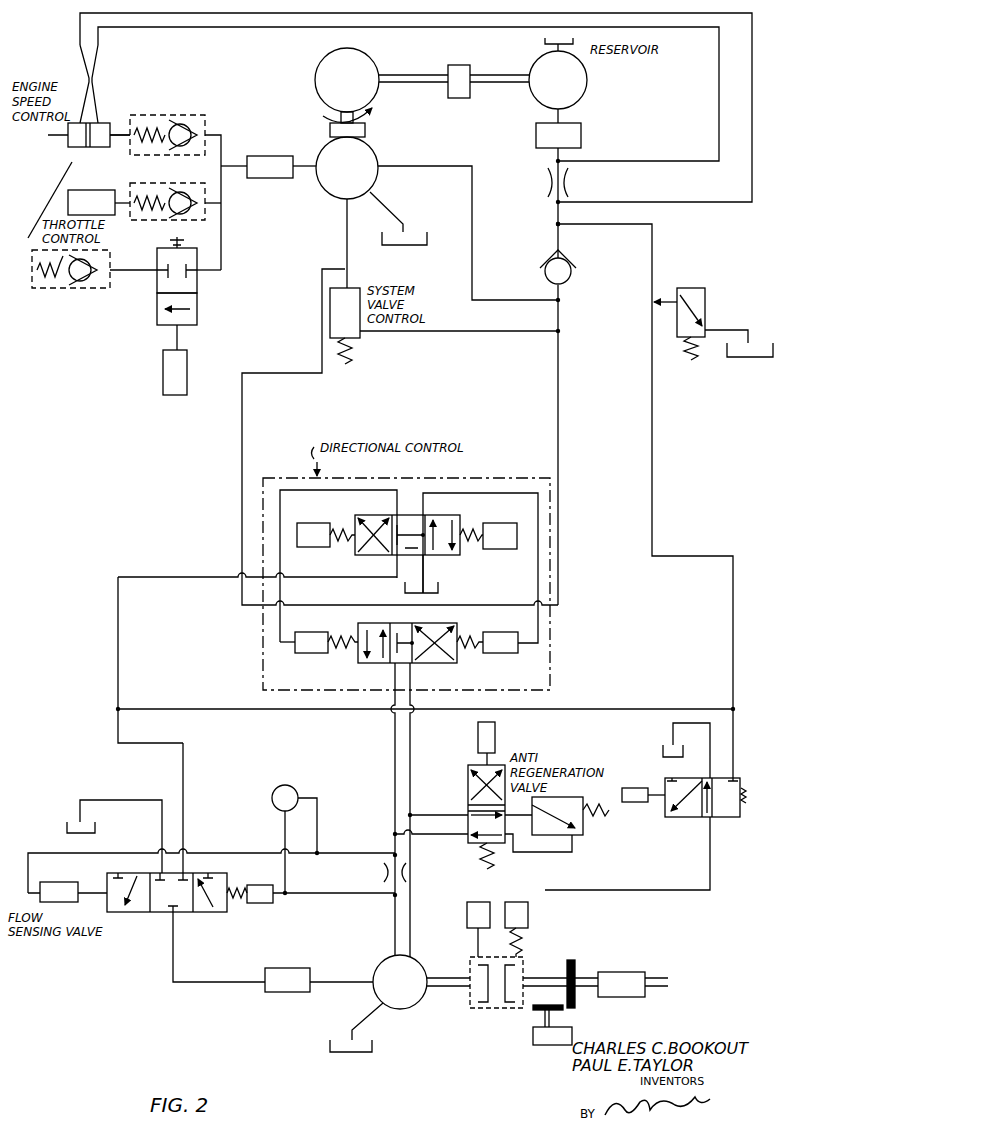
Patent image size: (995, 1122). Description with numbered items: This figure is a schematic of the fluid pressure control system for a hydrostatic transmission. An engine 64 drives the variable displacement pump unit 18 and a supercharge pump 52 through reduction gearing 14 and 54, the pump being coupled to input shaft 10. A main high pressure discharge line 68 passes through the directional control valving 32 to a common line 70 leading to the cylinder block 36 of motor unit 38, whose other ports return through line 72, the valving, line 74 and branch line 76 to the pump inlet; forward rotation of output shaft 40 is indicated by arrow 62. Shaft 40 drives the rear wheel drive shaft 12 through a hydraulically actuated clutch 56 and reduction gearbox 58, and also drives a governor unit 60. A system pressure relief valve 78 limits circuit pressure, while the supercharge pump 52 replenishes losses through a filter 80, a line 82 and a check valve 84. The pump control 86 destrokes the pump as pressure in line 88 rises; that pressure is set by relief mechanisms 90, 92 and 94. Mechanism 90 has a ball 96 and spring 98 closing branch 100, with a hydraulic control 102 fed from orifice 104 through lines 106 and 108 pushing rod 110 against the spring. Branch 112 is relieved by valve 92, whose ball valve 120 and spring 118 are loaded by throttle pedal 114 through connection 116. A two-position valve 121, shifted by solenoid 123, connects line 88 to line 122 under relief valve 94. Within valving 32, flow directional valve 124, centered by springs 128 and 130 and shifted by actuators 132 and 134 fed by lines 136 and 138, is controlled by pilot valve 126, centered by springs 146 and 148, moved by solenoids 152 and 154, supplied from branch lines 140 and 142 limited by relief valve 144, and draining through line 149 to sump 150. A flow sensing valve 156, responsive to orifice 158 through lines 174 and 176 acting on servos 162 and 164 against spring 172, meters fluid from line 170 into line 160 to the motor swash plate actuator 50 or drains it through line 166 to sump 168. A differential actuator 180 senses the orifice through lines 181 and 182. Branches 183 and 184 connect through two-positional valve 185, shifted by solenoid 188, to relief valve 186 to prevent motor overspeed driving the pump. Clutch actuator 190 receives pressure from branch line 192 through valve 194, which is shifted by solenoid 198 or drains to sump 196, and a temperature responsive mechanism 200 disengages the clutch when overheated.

The input shaft 10 is at (340, 118).
The power output shaft 12 is at (648, 963).
The reduction gearing 14 is at (370, 128).
The hydraulic pump 18 is at (318, 182).
The directional control valving 32 is at (550, 593).
The cylinder block 36 is at (386, 959).
The motor unit 38 is at (424, 962).
The output shaft 40 is at (446, 968).
The piston actuator 50 is at (277, 967).
The supercharge pump 52 is at (548, 66).
The reduction gearing 54 is at (462, 78).
The hydraulically actuated clutch 56 is at (545, 951).
The reduction gearbox 58 is at (603, 960).
The governor unit 60 is at (533, 1040).
The arrow 62 is at (405, 95).
The engine 64 is at (323, 63).
The main high pressure pump discharge line 68 is at (320, 285).
The common line 70 is at (392, 748).
The common low pressure return line 72 is at (410, 915).
The line 74 is at (564, 372).
The branch line 76 is at (454, 168).
The system pressure relief valve 78 is at (348, 288).
The filter 80 is at (582, 136).
The line 82 is at (555, 212).
The non-return check valve 84 is at (576, 276).
The pump control 86 is at (282, 160).
The line 88 is at (247, 182).
The relief valve mechanism 90 is at (179, 125).
The pressure relief valve 92 is at (174, 205).
The pressure relief valve 94 is at (80, 297).
The ball 96 is at (179, 114).
The spring 98 is at (143, 114).
The branch 100 is at (222, 142).
The hydraulic control 102 is at (68, 135).
The orifice 104 is at (541, 184).
The line 106 is at (643, 167).
The line 108 is at (602, 205).
The actuating rod 110 is at (119, 142).
The parallel branch 112 is at (208, 189).
The throttle pedal 114 is at (50, 184).
The mechanical connection 116 is at (95, 190).
The spring 118 is at (164, 220).
The ball valve 120 is at (177, 224).
The two-position flow-through valve 121 is at (197, 298).
The line 122 is at (128, 272).
The solenoid 123 is at (187, 359).
The flow directional valve 124 is at (450, 628).
The pilot control valve 126 is at (458, 506).
The spring 128 is at (469, 658).
The spring 130 is at (350, 625).
The hydraulic actuator 132 is at (530, 625).
The hydraulic actuator 134 is at (324, 623).
The line 136 is at (354, 493).
The line 138 is at (498, 514).
The branch line 140 is at (307, 710).
The branch line 142 is at (118, 666).
The pressure relief valve 144 is at (706, 300).
The spring 146 is at (475, 549).
The spring 148 is at (348, 531).
The line 149 is at (429, 574).
The sump 150 is at (408, 584).
The solenoid 152 is at (307, 523).
The solenoid 154 is at (530, 509).
The flow sensing valve 156 is at (112, 876).
The orifice 158 is at (414, 875).
The line 160 is at (173, 930).
The hydraulically actuated servo 162 is at (68, 869).
The hydraulically actuated servo 164 is at (261, 904).
The line 166 is at (160, 823).
The fluid pressure sump 168 is at (65, 826).
The line 170 is at (165, 744).
The spring 172 is at (234, 885).
The line 174 is at (25, 853).
The line 176 is at (333, 896).
The pressure differential responsive actuator 180 is at (272, 798).
The line 181 is at (318, 825).
The line 182 is at (286, 825).
The branch connection 183 is at (444, 835).
The branch connection 184 is at (446, 815).
The two-positional valve 185 is at (466, 786).
The pressure relief valve 186 is at (582, 831).
The solenoid 188 is at (475, 742).
The piston type actuator 190 is at (529, 902).
The branch line 192 is at (738, 735).
The two-position electrically controlled valve 194 is at (744, 810).
The sump 196 is at (665, 745).
The solenoid 198 is at (645, 802).
The temperature responsive mechanism 200 is at (482, 902).